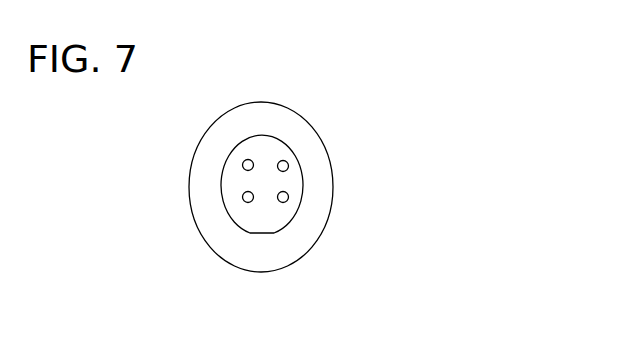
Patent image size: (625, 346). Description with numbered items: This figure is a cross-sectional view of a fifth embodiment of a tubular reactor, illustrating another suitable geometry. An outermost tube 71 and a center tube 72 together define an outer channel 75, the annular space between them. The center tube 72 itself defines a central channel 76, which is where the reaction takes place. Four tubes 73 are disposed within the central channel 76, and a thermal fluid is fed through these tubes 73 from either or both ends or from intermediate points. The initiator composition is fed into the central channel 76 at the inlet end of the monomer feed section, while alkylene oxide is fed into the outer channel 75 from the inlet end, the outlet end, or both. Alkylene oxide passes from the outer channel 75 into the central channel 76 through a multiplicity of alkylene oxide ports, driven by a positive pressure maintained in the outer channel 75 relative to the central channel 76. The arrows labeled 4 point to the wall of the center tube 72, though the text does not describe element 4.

The rib 4 is at (232, 126).
The outermost tube 71 is at (190, 172).
The center tube 72 is at (238, 155).
The tubes 73 is at (249, 159).
The outer channel 75 is at (256, 246).
The central channel 76 is at (264, 150).